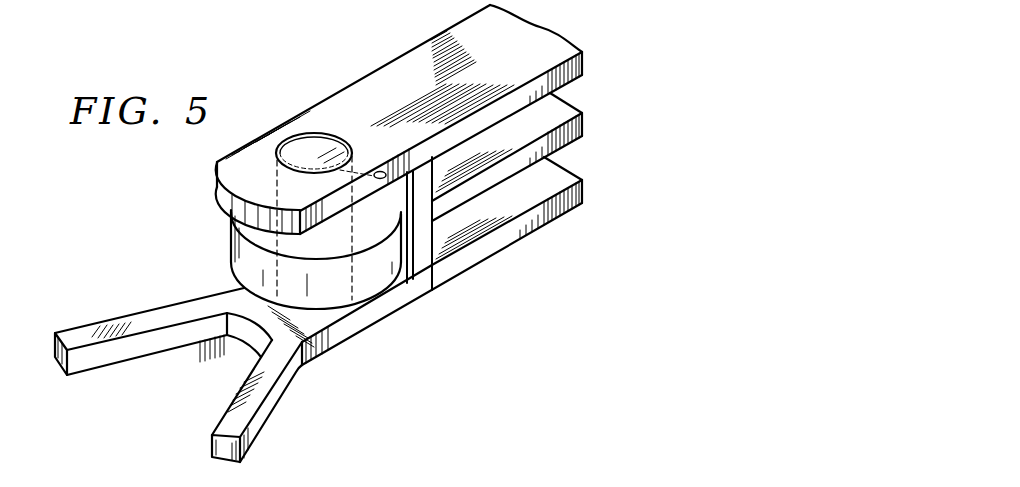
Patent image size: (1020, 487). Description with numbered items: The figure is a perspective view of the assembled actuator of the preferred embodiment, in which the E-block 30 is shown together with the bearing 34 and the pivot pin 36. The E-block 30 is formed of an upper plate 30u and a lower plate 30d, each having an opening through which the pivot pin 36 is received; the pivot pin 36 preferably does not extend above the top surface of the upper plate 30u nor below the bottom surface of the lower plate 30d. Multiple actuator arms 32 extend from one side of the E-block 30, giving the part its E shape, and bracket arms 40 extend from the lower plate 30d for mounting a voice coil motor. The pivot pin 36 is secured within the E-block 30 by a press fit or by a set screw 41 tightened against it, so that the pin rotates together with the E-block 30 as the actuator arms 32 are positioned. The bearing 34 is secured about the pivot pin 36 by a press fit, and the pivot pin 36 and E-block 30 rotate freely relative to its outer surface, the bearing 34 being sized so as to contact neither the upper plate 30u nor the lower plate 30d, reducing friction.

The E-block 30 is at (373, 82).
The upper plate 30u is at (228, 195).
The lower plate 30d is at (237, 348).
The actuator arms 32 is at (583, 52).
The bearing 34 is at (230, 248).
The pivot pin 36 is at (318, 145).
The bracket arms 40 is at (73, 335).
The set screw 41 is at (381, 171).